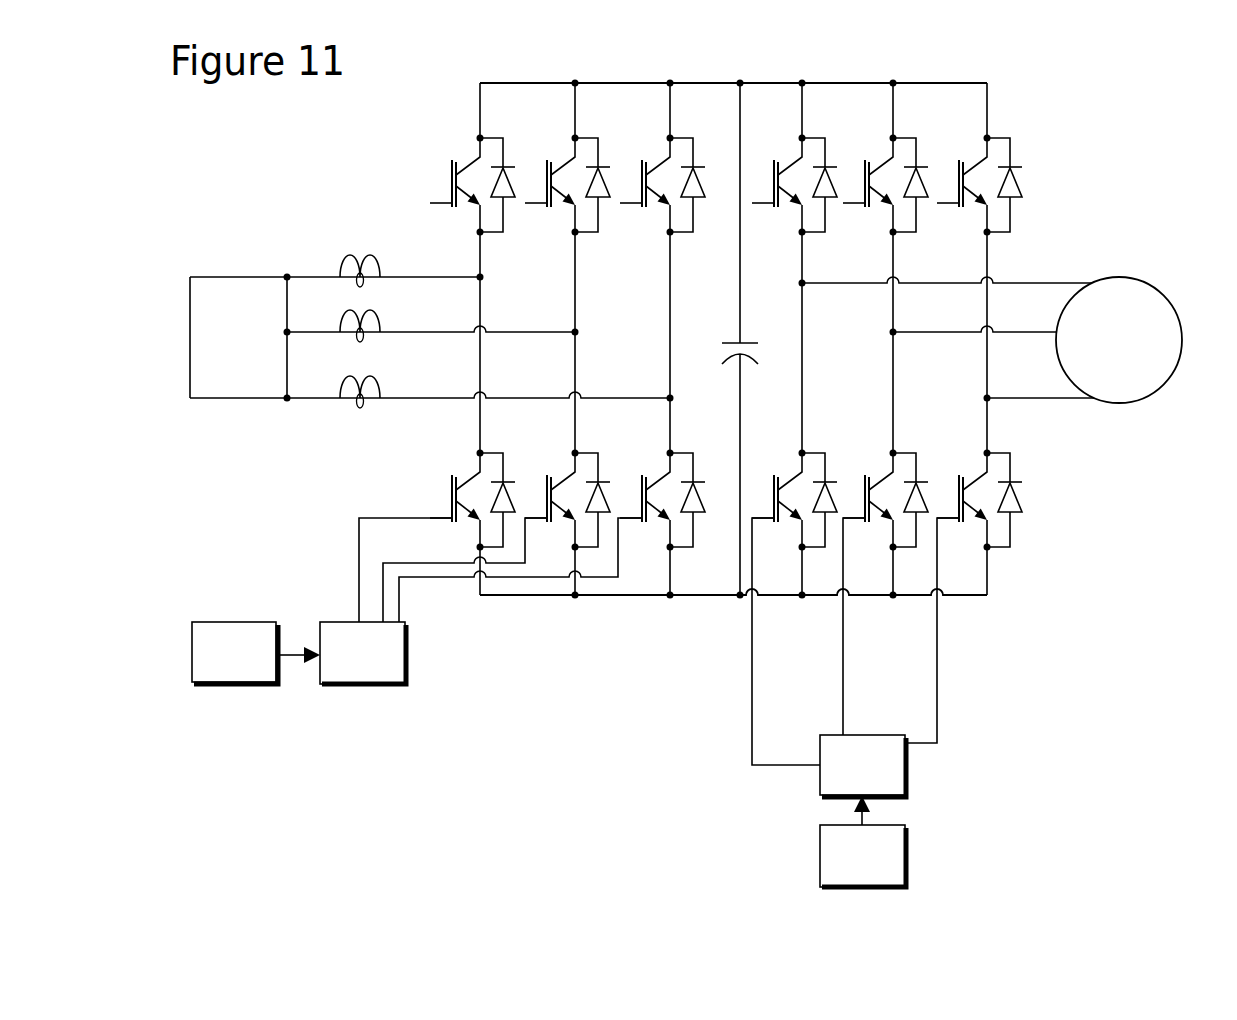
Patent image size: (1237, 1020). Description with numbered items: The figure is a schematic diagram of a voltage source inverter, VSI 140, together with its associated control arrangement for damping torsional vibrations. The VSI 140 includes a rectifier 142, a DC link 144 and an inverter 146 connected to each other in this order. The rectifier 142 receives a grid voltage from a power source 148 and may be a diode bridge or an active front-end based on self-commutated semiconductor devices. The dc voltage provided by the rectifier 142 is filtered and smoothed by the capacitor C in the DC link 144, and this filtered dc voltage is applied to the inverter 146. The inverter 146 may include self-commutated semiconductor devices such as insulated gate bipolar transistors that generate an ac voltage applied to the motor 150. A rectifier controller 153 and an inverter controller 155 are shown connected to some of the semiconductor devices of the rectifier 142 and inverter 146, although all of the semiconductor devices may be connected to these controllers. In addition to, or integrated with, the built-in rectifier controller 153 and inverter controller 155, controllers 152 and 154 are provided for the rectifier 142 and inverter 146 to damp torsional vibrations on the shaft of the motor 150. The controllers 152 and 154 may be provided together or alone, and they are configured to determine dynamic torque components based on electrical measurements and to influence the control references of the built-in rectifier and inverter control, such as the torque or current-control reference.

The VSI 140 is at (745, 28).
The rectifier 142 is at (667, 606).
The DC link 144 is at (778, 606).
The inverter 146 is at (987, 606).
The power source 148 is at (230, 398).
The motor 150 is at (1155, 283).
The controller 152 is at (235, 685).
The rectifier controller 153 is at (407, 658).
The controller 154 is at (907, 860).
The inverter controller 155 is at (907, 763).